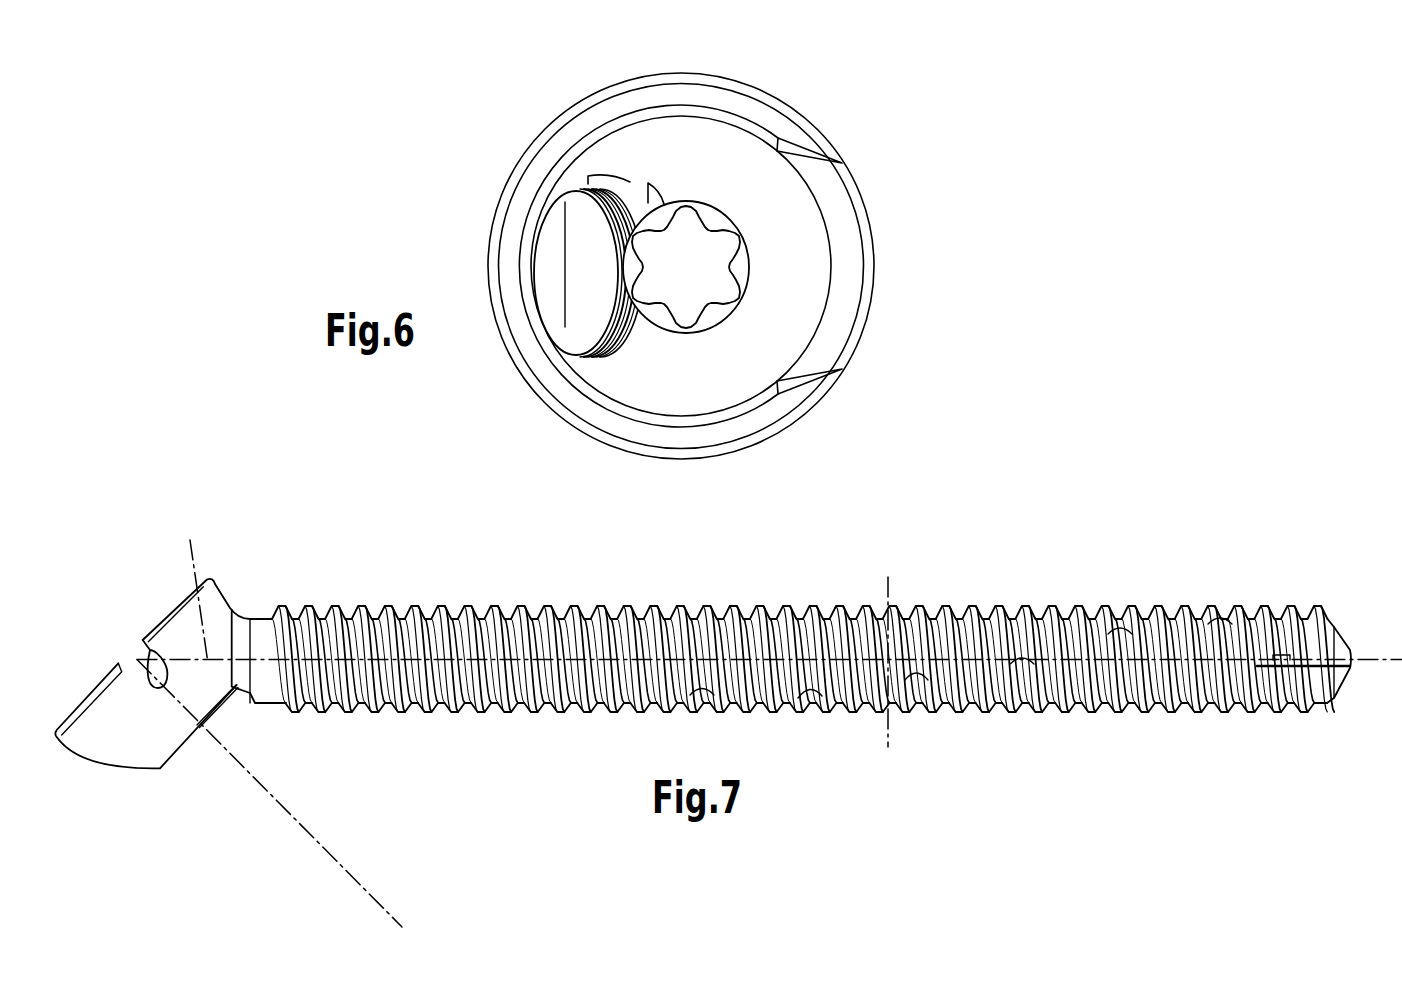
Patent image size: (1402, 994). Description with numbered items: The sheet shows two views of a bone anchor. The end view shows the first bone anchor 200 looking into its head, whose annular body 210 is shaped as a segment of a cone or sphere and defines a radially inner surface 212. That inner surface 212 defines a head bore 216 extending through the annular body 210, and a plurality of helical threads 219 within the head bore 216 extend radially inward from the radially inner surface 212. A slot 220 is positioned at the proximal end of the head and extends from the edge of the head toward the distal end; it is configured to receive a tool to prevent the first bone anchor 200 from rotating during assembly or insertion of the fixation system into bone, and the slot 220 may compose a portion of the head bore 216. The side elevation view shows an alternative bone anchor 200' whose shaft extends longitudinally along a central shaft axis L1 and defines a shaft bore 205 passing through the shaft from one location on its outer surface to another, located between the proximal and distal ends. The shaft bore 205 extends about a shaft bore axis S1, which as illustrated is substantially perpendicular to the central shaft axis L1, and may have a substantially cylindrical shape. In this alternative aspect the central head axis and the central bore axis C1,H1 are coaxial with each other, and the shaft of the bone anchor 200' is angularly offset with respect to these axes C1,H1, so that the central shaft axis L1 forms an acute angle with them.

In FIG. 6, the first bone anchor 200 is at (684, 238).
In FIG. 6, the annular body 210 is at (535, 353).
In FIG. 6, the radially inner surface 212 is at (720, 160).
In FIG. 6, the head bore 216 is at (582, 247).
In FIG. 6, the helical threads 219 is at (610, 217).
In FIG. 6, the slot 220 is at (858, 252).
In FIG. 7, the bone anchor 200' is at (728, 694).
In FIG. 7, the shaft bore 205 is at (882, 618).
In FIG. 7, the central shaft axis L1 is at (193, 584).
In FIG. 7, the shaft bore axis S1 is at (888, 733).
In FIG. 7, the central head axis and central bore axis C1,H1 is at (298, 822).